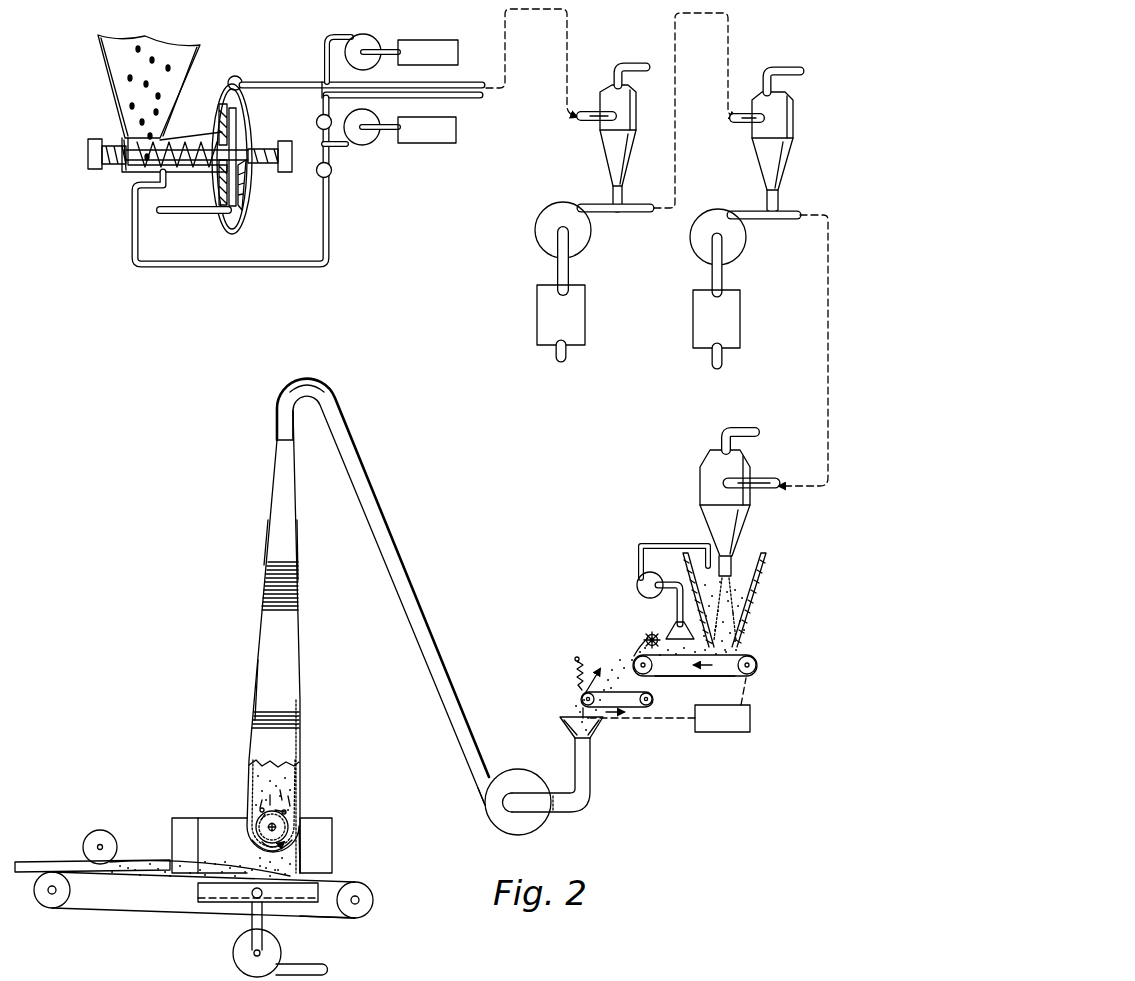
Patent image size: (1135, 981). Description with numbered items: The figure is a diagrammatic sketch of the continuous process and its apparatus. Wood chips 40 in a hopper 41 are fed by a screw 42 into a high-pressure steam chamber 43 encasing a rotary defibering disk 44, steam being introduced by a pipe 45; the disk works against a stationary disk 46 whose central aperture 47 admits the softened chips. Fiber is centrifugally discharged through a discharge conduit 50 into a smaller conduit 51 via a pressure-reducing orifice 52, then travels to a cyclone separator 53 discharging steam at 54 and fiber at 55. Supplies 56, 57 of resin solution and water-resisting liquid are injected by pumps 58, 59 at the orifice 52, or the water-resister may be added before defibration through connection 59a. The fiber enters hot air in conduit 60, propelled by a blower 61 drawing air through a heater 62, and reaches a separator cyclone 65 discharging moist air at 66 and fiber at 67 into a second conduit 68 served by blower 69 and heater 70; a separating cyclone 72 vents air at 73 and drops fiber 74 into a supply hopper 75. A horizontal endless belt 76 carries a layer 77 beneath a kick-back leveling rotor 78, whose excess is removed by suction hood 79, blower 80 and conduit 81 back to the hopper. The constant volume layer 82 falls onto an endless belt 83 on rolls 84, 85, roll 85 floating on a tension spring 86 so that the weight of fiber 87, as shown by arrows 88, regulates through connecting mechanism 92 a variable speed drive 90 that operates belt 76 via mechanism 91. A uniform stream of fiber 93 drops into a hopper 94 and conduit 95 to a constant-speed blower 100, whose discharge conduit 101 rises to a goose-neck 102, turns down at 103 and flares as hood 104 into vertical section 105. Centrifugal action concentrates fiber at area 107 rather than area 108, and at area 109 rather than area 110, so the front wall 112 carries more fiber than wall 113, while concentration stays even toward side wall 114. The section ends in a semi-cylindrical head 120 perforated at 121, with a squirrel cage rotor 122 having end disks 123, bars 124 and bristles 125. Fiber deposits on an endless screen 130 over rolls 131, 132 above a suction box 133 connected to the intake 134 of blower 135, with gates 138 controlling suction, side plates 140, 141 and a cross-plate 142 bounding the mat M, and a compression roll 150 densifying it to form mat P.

The wood chips 40 is at (152, 58).
The hopper 41 is at (100, 65).
The screw 42 is at (128, 172).
The high-pressure steam chamber 43 is at (246, 200).
The rotary defibering disk 44 is at (250, 128).
The steam pipe 45 is at (180, 215).
The stationary disk 46 is at (220, 122).
The central aperture 47 is at (208, 172).
The discharge conduit 50 is at (264, 80).
The conduit 51 is at (478, 96).
The orifice 52 is at (323, 78).
The cyclone separator 53 is at (637, 116).
The steam discharge 54 is at (633, 63).
The fiber discharge 55 is at (611, 193).
The resin solution supply 56 is at (430, 45).
The water-resisting agent supply 57 is at (430, 143).
The pump 58 is at (372, 40).
The pump 59 is at (362, 143).
The connection 59a is at (256, 262).
The hot air conduit 60 is at (641, 214).
The blower 61 is at (546, 240).
The heater 62 is at (537, 318).
The separator cyclone 65 is at (794, 118).
The moist air discharge 66 is at (787, 68).
The fiber discharge 67 is at (780, 197).
The hot air conduit 68 is at (787, 222).
The blower 69 is at (706, 252).
The heater 70 is at (741, 322).
The separating cyclone 72 is at (700, 468).
The air discharge 73 is at (735, 430).
The fiber 74 is at (742, 560).
The supply hopper 75 is at (767, 580).
The horizontal endless belt 76 is at (750, 656).
The layer 77 is at (698, 662).
The kick-back leveling rotor 78 is at (650, 633).
The suction hood 79 is at (672, 630).
The blower 80 is at (656, 578).
The conduit 81 is at (668, 545).
The constant volume layer 82 is at (634, 654).
The endless belt 83 is at (653, 696).
The roll 84 is at (653, 700).
The roll 85 is at (582, 697).
The tension spring 86 is at (576, 677).
The fiber 87 is at (602, 692).
The arrows 88 is at (579, 660).
The variable speed drive 90 is at (738, 733).
The mechanism 91 is at (748, 690).
The connecting mechanism 92 is at (652, 722).
The stream of fiber 93 is at (580, 714).
The hopper 94 is at (563, 727).
The conduit 95 is at (592, 786).
The blower 100 is at (540, 812).
The discharge conduit 101 is at (437, 612).
The goose-neck 102 is at (316, 383).
The downward turn 103 is at (275, 428).
The hood 104 is at (286, 620).
The vertical section 105 is at (300, 761).
The area 107 is at (472, 782).
The area 108 is at (491, 774).
The area 109 is at (274, 412).
The area 110 is at (297, 418).
The front wall 112 is at (260, 542).
The wall 113 is at (301, 553).
The side wall 114 is at (264, 688).
The semi-cylindrical head 120 is at (304, 846).
The perforations 121 is at (250, 848).
The squirrel cage rotor 122 is at (286, 818).
The end disks 123 is at (294, 833).
The bars 124 is at (280, 806).
The bristles 125 is at (261, 805).
The endless screen 130 is at (162, 912).
The roll 131 is at (66, 902).
The roll 132 is at (374, 899).
The suction box 133 is at (331, 910).
The intake 134 is at (266, 920).
The blower 135 is at (247, 943).
The gates 138 is at (202, 883).
The side plate 140 is at (182, 818).
The side plate 141 is at (222, 816).
The cross-plate 142 is at (333, 861).
The compression roll 150 is at (103, 830).
The mat P is at (31, 860).
The mat M is at (136, 856).